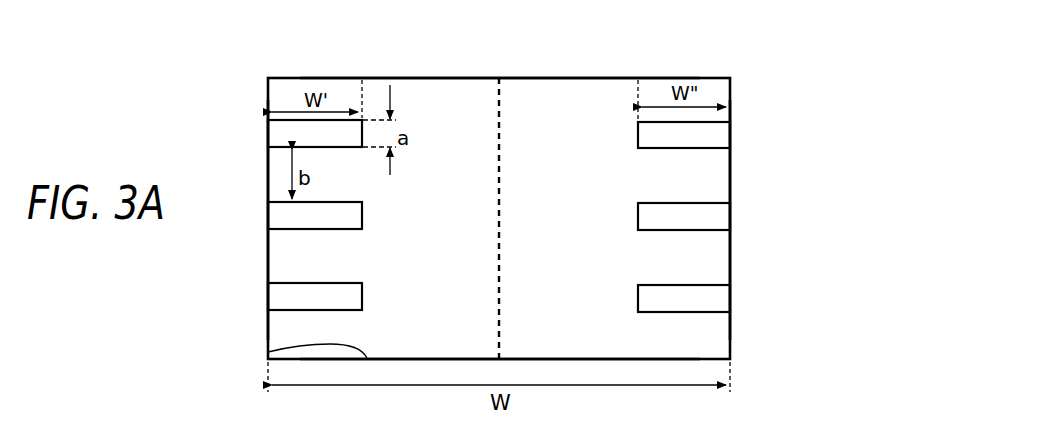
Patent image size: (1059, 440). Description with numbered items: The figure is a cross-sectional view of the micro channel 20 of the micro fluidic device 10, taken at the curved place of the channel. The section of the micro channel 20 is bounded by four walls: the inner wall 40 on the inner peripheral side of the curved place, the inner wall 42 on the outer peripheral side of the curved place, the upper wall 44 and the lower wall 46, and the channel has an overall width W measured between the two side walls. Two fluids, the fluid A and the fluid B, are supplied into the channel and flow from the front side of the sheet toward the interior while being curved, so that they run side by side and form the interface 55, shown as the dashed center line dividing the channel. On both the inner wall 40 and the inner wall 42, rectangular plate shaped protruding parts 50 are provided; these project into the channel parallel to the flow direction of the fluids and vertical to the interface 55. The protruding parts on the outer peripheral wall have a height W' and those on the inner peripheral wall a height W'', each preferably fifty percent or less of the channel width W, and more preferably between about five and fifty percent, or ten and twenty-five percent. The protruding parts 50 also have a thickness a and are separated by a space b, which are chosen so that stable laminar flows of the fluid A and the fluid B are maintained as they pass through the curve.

The micro fluidic device 10 is at (614, 64).
The micro channel 20 is at (527, 107).
The inner wall in the inner peripheral side 40 is at (728, 184).
The inner wall in the outer peripheral side 42 is at (270, 261).
The upper wall 44 is at (453, 79).
The lower wall 46 is at (270, 352).
The protruding parts 50 is at (700, 128).
The interface 55 is at (498, 127).
The fluid A is at (293, 327).
The fluid B is at (700, 335).